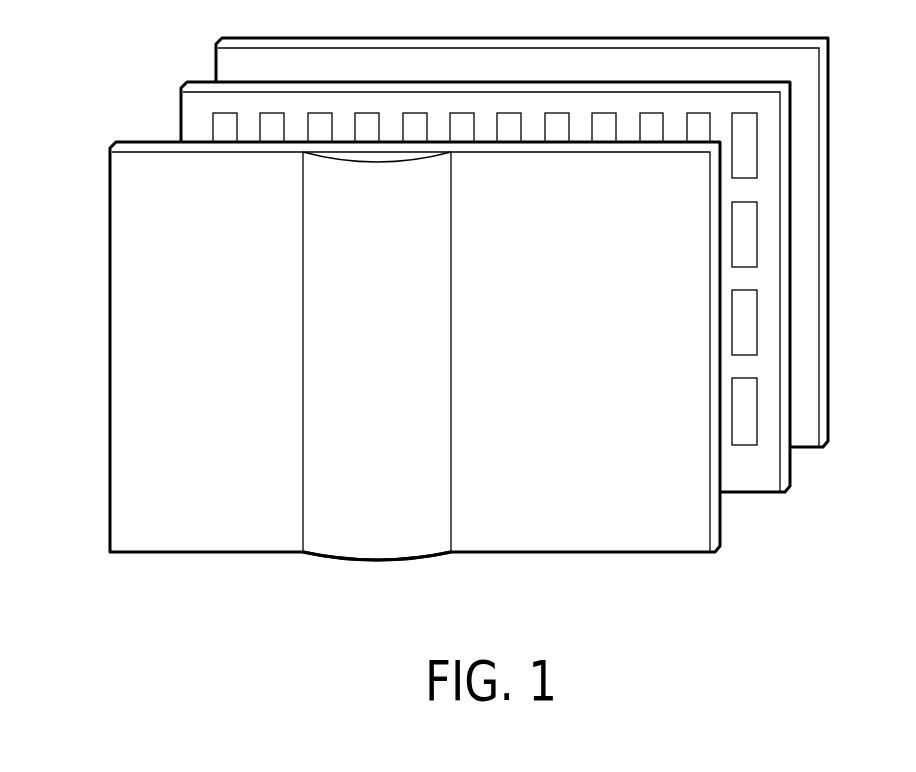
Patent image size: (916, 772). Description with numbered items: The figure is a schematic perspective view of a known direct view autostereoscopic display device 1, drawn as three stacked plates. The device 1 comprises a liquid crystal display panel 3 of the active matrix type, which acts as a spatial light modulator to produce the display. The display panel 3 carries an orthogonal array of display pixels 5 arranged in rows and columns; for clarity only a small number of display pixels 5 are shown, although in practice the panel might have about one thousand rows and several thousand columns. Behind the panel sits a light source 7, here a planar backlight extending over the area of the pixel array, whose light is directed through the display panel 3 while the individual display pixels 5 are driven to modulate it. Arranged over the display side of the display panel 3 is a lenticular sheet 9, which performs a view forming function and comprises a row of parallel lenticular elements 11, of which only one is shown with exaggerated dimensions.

The autostereoscopic display device 1 is at (457, 321).
The liquid crystal display panel 3 is at (790, 468).
The display pixels 5 is at (748, 162).
The light source 7 is at (828, 375).
The lenticular sheet 9 is at (720, 528).
The lenticular elements 11 is at (377, 543).